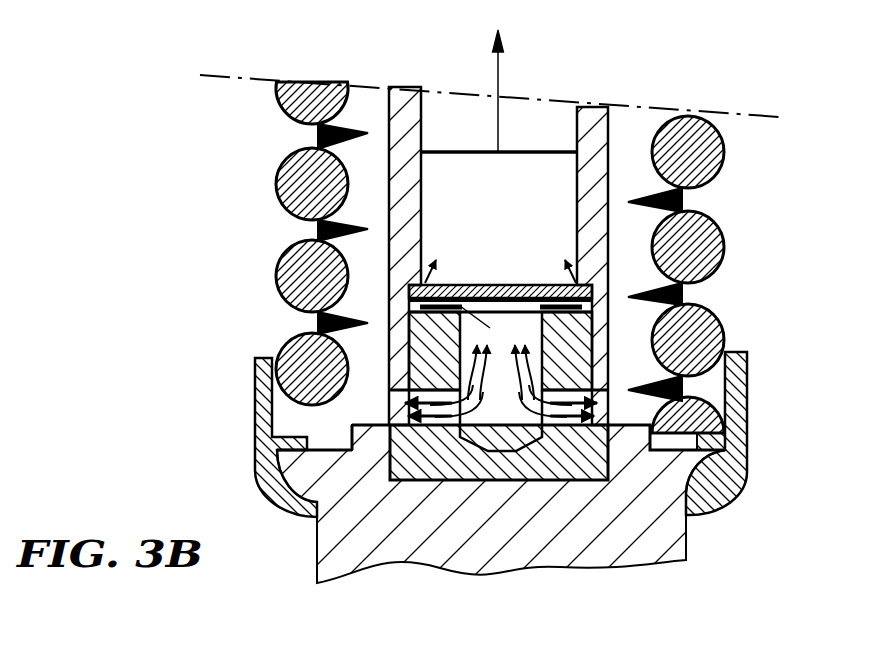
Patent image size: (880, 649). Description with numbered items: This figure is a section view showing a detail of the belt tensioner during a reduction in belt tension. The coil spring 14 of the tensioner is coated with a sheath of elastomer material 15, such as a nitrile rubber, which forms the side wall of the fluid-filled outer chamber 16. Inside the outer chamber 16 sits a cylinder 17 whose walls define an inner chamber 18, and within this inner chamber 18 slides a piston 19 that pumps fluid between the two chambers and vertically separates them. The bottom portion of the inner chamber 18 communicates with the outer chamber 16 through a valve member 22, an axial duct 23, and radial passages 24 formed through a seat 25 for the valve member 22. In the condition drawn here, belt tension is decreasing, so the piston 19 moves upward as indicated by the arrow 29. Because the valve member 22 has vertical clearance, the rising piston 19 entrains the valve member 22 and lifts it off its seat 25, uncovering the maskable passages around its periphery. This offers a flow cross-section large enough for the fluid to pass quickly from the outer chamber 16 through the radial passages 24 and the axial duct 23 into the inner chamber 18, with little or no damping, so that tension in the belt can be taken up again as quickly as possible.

The coil spring 14 is at (724, 160).
The sheath of elastomer material 15 is at (700, 198).
The outer chamber 16 is at (368, 108).
The cylinder 17 is at (594, 104).
The inner chamber 18 is at (499, 172).
The piston 19 is at (548, 120).
The valve member 22 is at (552, 283).
The axial duct 23 is at (454, 283).
The radial passages 24 is at (413, 420).
The seat 25 is at (593, 462).
The arrow 29 is at (495, 78).